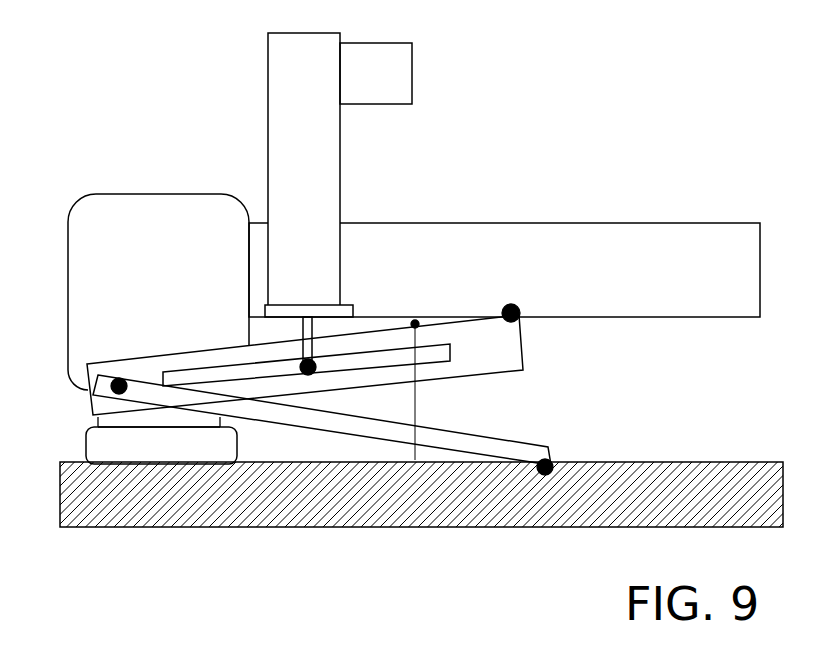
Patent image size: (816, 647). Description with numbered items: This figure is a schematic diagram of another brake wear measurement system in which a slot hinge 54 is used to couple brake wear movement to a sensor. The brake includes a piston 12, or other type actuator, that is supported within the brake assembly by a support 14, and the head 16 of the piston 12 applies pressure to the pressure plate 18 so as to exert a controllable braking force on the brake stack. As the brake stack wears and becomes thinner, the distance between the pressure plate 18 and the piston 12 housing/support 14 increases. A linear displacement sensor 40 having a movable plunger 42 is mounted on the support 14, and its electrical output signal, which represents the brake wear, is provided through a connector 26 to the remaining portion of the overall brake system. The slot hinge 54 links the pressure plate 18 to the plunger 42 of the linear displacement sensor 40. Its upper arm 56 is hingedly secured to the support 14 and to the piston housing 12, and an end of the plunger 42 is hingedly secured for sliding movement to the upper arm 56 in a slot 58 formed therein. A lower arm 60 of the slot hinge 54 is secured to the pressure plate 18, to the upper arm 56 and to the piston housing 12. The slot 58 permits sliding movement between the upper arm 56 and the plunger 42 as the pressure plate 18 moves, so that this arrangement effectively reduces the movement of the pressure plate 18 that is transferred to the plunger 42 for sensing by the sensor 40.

The piston 12 is at (166, 296).
The support 14 is at (469, 292).
The head 16 is at (102, 443).
The pressure plate 18 is at (168, 498).
The connector 26 is at (390, 65).
The linear displacement sensor 40 is at (292, 160).
The plunger 42 is at (305, 332).
The slot hinge 54 is at (351, 389).
The upper arm 56 is at (502, 347).
The slot 58 is at (388, 358).
The lower arm 60 is at (517, 452).